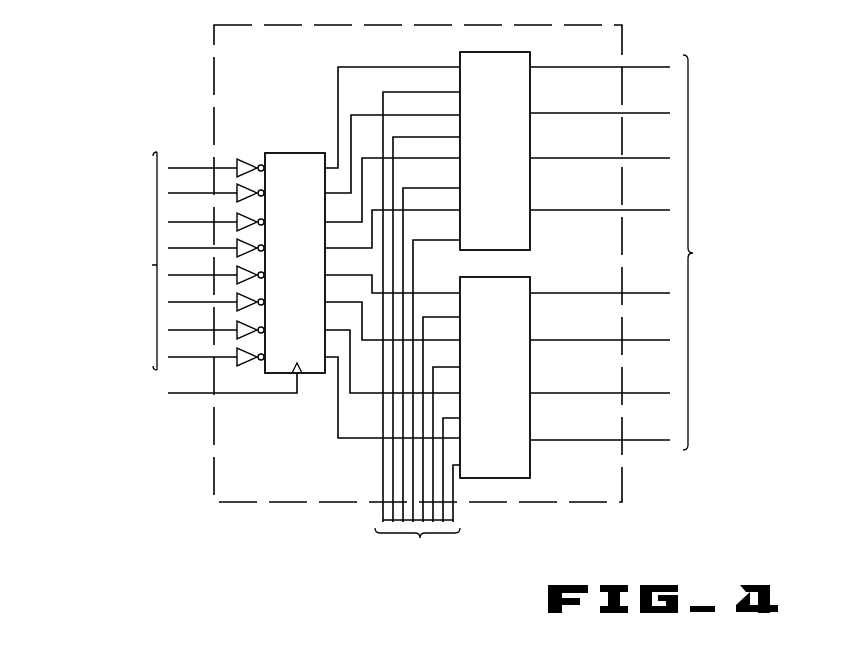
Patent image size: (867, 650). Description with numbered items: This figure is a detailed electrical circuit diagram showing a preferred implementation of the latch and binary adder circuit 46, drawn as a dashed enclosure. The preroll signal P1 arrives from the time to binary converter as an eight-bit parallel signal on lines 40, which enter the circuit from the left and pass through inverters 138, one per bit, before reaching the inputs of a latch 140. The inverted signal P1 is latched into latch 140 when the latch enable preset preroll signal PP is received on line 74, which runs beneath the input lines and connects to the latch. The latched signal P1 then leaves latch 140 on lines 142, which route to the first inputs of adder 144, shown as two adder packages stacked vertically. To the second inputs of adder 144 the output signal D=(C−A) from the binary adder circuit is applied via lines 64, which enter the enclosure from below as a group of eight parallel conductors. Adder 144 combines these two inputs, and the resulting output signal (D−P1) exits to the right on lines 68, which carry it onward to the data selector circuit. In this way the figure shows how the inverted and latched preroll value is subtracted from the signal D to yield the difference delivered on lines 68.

The lines 40 is at (197, 250).
The latch and binary adder circuit 46 is at (500, 25).
The lines 64 is at (412, 511).
The lines 68 is at (568, 113).
The line 74 is at (191, 392).
The inverters 138 is at (251, 215).
The latch 140 is at (296, 152).
The lines 142 is at (368, 157).
The adder 144 is at (530, 52).